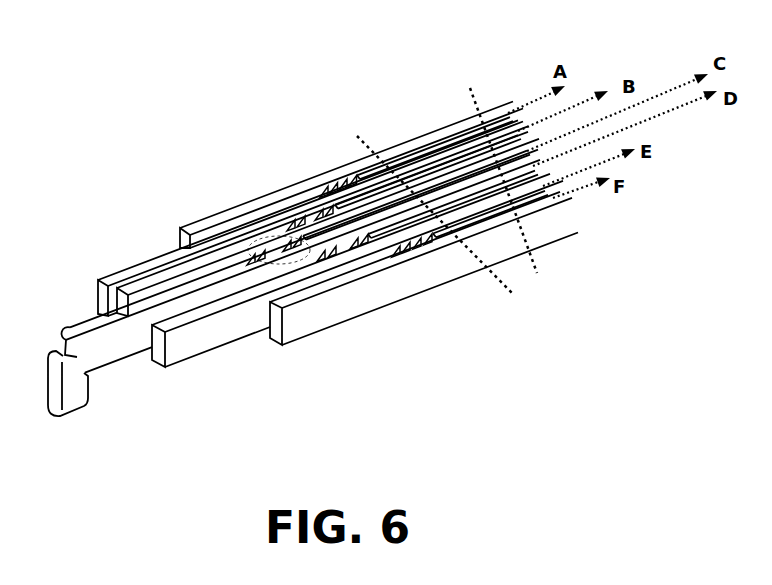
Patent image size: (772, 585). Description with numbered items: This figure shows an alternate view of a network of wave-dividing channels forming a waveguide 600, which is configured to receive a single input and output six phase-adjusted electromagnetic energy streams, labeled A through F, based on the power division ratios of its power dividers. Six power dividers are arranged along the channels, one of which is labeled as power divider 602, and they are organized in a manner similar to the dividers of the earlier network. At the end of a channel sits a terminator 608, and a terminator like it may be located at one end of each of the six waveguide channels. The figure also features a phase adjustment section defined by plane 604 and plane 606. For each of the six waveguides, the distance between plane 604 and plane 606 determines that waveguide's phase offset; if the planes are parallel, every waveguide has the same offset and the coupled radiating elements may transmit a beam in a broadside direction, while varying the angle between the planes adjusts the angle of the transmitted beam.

The waveguide 600 is at (238, 186).
The power divider 602 is at (288, 262).
The plane 604 is at (360, 138).
The plane 606 is at (471, 90).
The terminator 608 is at (102, 300).